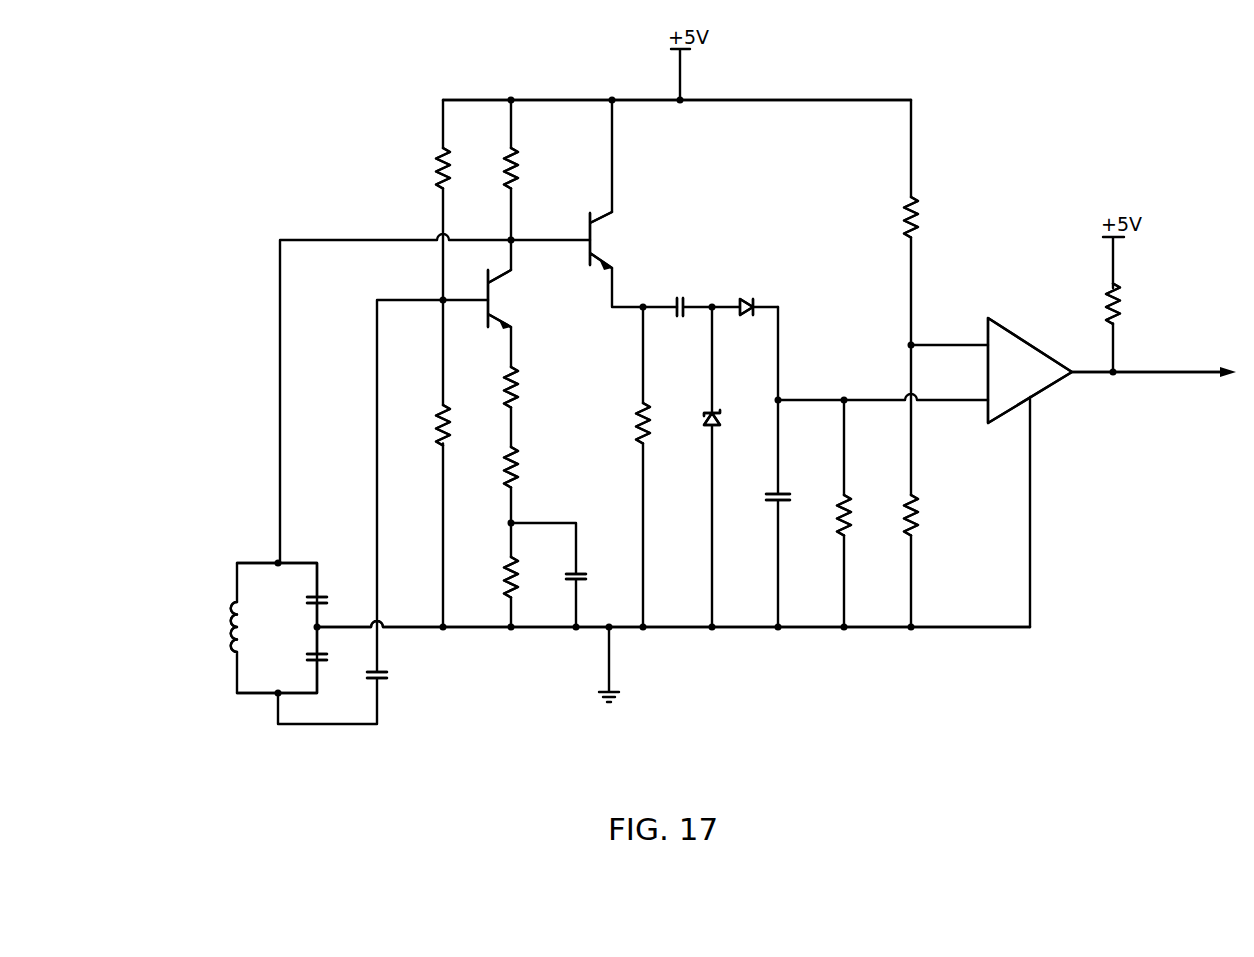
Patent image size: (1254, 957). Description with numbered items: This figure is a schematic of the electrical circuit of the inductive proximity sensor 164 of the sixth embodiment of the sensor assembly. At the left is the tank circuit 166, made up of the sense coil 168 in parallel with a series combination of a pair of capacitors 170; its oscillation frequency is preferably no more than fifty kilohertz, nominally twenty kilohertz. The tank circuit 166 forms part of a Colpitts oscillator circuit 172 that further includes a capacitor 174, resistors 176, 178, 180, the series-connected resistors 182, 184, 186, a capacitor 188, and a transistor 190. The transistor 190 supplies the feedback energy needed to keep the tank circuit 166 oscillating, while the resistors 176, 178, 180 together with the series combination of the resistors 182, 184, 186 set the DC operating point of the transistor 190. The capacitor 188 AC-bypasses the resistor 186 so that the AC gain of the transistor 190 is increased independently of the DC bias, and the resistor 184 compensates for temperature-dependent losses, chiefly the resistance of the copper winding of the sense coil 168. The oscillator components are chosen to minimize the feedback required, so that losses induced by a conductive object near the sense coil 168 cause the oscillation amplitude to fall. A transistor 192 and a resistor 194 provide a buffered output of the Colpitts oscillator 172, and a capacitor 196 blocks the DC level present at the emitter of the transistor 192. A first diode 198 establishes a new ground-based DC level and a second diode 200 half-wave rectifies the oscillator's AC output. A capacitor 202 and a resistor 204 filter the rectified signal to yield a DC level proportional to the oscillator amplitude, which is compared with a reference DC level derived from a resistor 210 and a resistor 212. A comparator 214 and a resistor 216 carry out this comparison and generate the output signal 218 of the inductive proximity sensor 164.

The inductive proximity sensor 164 is at (256, 130).
The tank circuit 166 is at (230, 565).
The sense coil 168 is at (230, 648).
The capacitors 170 is at (322, 597).
The Colpitts oscillator circuit 172 is at (457, 680).
The capacitor 174 is at (380, 675).
The resistor 176 is at (450, 160).
The resistor 178 is at (450, 412).
The resistor 180 is at (518, 160).
The resistor 182 is at (517, 379).
The resistor 184 is at (517, 459).
The resistor 186 is at (517, 565).
The capacitor 188 is at (582, 574).
The transistor 190 is at (486, 283).
The transistor 192 is at (588, 223).
The resistor 194 is at (649, 411).
The capacitor 196 is at (683, 299).
The first diode 198 is at (716, 413).
The second diode 200 is at (750, 300).
The capacitor 202 is at (785, 492).
The resistor 204 is at (851, 505).
The resistor 210 is at (917, 206).
The resistor 212 is at (917, 504).
The comparator 214 is at (1020, 268).
The resistor 216 is at (1120, 295).
The output signal 218 is at (1152, 371).